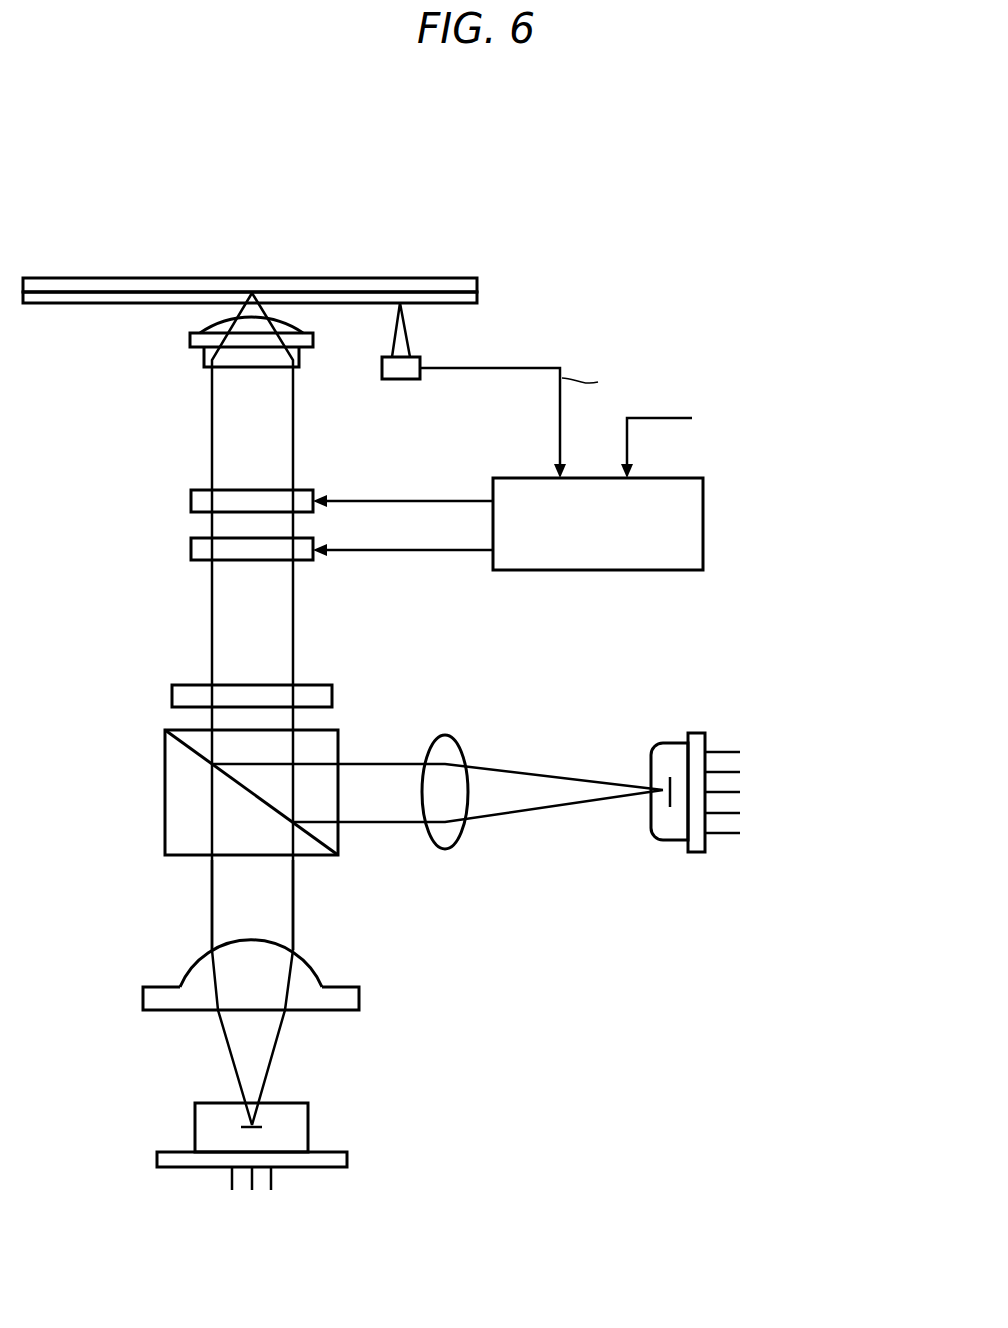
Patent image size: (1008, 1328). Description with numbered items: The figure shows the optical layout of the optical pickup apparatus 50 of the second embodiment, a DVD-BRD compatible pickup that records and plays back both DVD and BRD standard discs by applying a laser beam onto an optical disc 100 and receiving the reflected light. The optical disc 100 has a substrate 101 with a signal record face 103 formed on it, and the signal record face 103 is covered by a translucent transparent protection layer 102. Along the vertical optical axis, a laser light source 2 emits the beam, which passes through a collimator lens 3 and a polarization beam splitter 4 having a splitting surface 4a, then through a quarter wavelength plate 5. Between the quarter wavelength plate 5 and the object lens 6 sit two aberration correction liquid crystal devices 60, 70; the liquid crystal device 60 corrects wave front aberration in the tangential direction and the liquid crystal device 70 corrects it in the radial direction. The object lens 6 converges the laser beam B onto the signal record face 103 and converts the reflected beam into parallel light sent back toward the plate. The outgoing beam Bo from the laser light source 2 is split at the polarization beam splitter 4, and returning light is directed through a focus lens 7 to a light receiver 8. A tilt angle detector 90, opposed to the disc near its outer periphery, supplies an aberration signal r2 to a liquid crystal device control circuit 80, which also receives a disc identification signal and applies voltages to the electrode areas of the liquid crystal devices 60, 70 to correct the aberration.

The optical pickup apparatus 50 is at (544, 183).
The optical disc 100 is at (291, 282).
The substrate 101 is at (478, 284).
The transparent protection layer 102 is at (478, 299).
The signal record face 103 is at (428, 296).
The object lens 6 is at (302, 357).
The laser beam B is at (294, 588).
The tilt angle detector 90 is at (397, 383).
The aberration correction liquid crystal device 60 is at (314, 486).
The aberration correction liquid crystal device 70 is at (314, 535).
The liquid crystal device control circuit 80 is at (704, 520).
The quarter wavelength plate 5 is at (325, 697).
The polarization beam splitter 4 is at (279, 801).
The beam splitting surface 4a is at (330, 842).
The focus lens 7 is at (447, 838).
The light receiver 8 is at (670, 743).
The outgoing light beam Bo is at (294, 903).
The collimator lens 3 is at (343, 998).
The laser light source 2 is at (298, 1128).